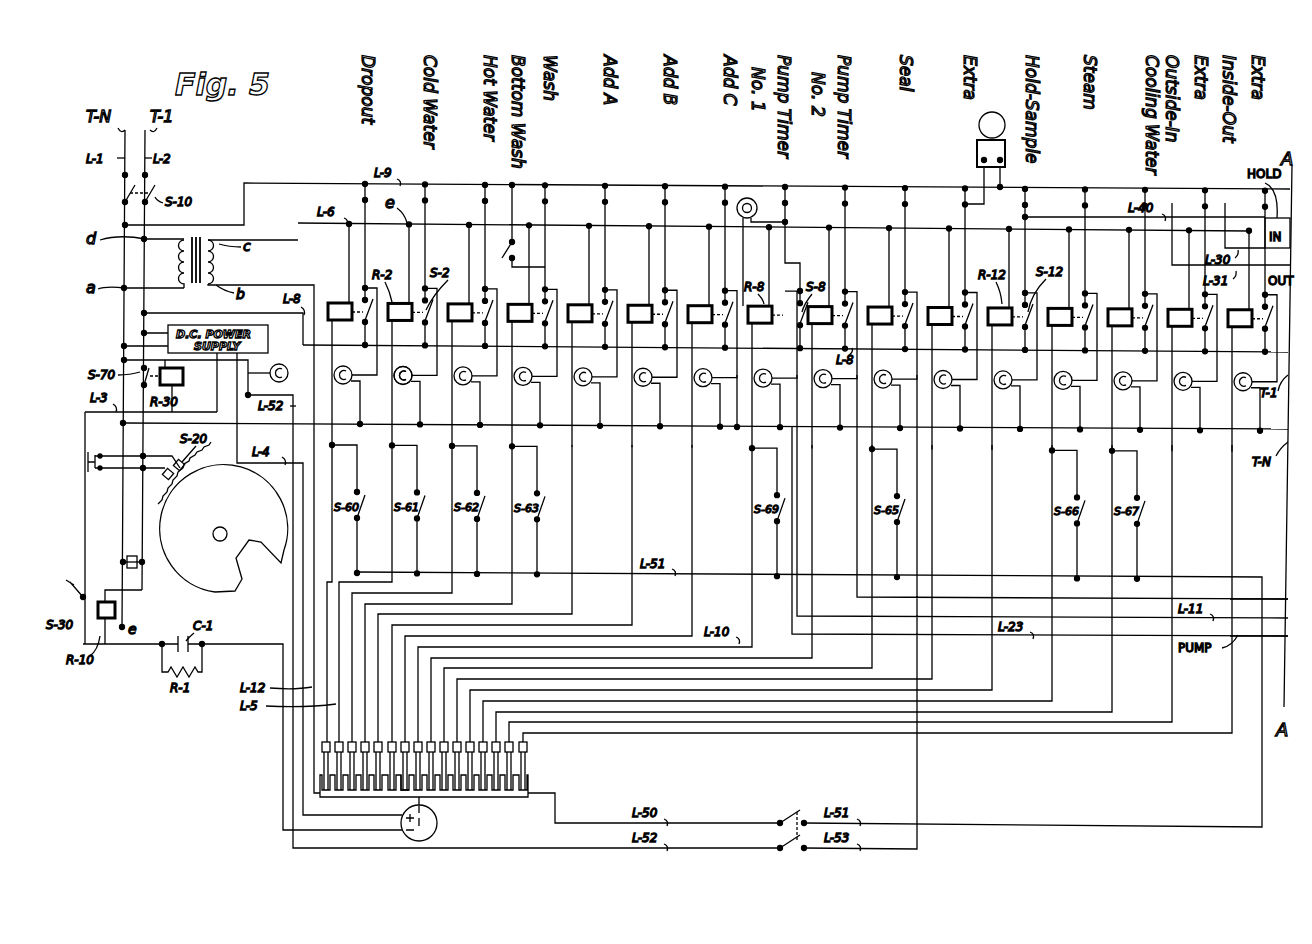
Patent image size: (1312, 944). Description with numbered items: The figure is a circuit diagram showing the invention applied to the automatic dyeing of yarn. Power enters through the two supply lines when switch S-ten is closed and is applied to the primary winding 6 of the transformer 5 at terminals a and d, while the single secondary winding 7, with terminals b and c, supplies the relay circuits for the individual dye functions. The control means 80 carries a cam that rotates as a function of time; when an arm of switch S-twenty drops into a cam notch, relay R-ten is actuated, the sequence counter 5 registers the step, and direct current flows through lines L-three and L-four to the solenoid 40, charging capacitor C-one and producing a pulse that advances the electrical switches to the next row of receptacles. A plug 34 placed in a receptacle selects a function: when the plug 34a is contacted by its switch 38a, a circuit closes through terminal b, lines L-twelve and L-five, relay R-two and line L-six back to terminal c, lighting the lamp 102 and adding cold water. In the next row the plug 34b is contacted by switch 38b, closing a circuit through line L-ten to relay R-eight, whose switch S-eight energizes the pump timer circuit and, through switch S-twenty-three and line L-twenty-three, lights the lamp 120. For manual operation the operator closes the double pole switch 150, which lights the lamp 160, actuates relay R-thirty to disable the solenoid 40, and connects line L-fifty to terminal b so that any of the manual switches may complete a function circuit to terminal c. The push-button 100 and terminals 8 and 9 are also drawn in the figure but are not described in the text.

The transformer 5 is at (196, 236).
The primary winding 6 is at (179, 264).
The secondary winding 7 is at (223, 263).
The pump terminal 8 is at (1275, 620).
The pump terminal 9 is at (1275, 617).
The plug 34 is at (364, 741).
The plug 34a is at (335, 742).
The plug 34b is at (527, 743).
The switch 38a is at (337, 780).
The switch 38b is at (414, 778).
The solenoid 40 is at (447, 822).
The control means 80 is at (182, 597).
The push button 100 is at (90, 452).
The lamp 102 is at (404, 386).
The lamp 120 is at (745, 197).
The double pole switch 150 is at (784, 812).
The lamp 160 is at (272, 364).